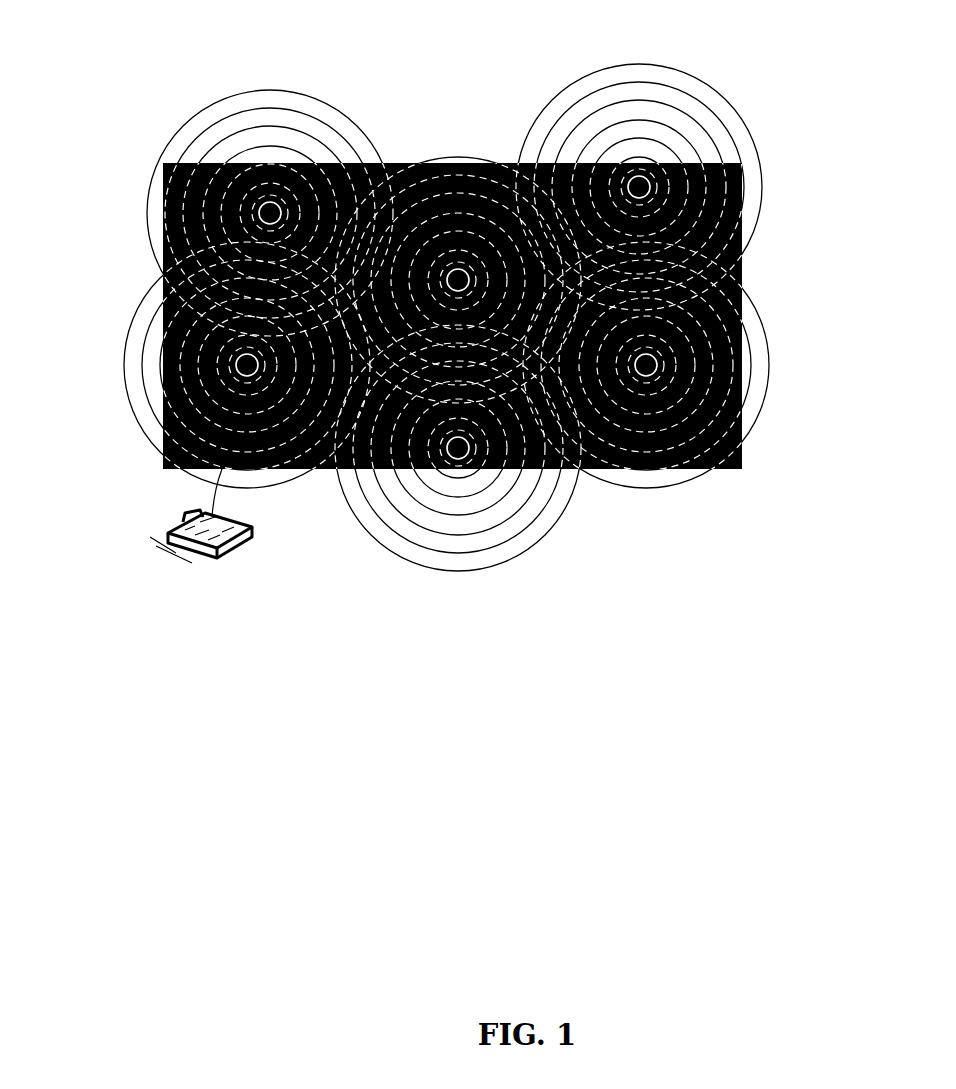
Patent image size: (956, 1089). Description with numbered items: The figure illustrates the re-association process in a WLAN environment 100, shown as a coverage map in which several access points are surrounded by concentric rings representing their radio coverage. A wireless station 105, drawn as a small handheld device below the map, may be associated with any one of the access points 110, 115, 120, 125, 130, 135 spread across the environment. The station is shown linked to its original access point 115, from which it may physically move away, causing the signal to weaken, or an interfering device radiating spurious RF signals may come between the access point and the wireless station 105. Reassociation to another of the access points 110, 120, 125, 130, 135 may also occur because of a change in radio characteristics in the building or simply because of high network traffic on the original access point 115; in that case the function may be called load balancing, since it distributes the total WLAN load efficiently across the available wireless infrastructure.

The WLAN environment 100 is at (452, 244).
The wireless station 105 is at (163, 538).
The access point 110 is at (254, 206).
The original access point 115 is at (202, 365).
The access point 120 is at (458, 448).
The access point 125 is at (646, 416).
The access point 130 is at (457, 259).
The access point 135 is at (694, 165).